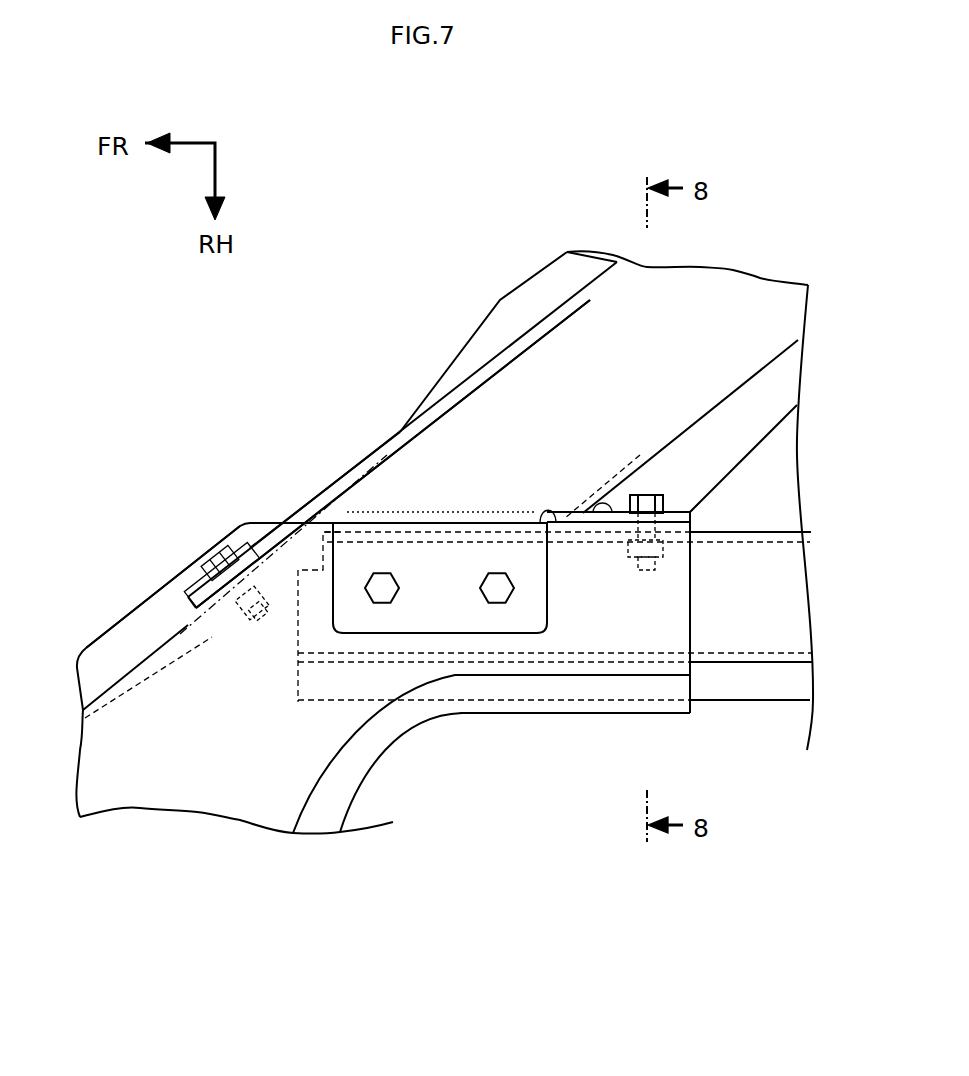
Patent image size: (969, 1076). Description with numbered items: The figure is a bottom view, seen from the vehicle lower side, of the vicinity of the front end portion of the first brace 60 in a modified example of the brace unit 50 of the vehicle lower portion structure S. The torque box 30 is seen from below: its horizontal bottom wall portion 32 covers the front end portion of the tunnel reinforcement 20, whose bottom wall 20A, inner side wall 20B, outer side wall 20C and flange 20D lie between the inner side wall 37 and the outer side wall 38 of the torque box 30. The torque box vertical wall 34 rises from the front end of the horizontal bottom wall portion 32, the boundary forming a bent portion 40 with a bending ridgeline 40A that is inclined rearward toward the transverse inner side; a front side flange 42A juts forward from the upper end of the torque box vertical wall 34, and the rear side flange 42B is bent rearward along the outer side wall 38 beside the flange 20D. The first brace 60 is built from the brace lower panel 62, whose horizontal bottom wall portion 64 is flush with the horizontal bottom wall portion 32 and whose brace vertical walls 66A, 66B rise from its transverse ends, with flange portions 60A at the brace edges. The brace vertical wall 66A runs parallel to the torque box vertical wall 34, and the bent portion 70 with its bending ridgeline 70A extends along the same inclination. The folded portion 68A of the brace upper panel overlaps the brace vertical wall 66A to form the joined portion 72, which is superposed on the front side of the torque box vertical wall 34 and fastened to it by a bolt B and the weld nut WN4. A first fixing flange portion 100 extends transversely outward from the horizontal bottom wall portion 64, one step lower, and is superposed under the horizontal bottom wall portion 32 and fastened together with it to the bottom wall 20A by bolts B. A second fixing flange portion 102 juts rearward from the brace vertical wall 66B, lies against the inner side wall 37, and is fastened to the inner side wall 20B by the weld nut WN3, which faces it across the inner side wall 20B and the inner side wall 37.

The tunnel reinforcement 20 is at (604, 663).
The bottom wall 20A is at (782, 610).
The inner side wall 20B is at (768, 530).
The outer side wall 20C is at (793, 667).
The flange 20D is at (782, 687).
The inner torque box 30 is at (76, 793).
The horizontal bottom wall portion 32 is at (205, 793).
The torque box vertical wall 34 is at (130, 670).
The inner side wall 37 is at (613, 514).
The outer side wall 38 is at (612, 677).
The bent portion 40 is at (186, 575).
The bending ridgeline 40A is at (73, 668).
The front side flange 42A is at (143, 617).
The rear side flange 42B is at (333, 797).
The brace unit 50 is at (400, 432).
The first brace 60 is at (402, 435).
The flange portion 60A is at (775, 390).
The brace lower panel 62 is at (330, 482).
The horizontal bottom wall portion 64 is at (730, 287).
The brace vertical wall 66A is at (300, 504).
The brace vertical wall 66B is at (772, 360).
The folded portion 68A is at (180, 632).
The bent portion 70 is at (508, 326).
The bending ridgeline 70A is at (533, 320).
The joined portion 72 is at (194, 592).
The first fixing flange portion 100 is at (498, 640).
The second fixing flange portion 102 is at (688, 506).
The bolt B is at (398, 580).
The weld nut WN3 is at (665, 553).
The weld nut WN4 is at (240, 617).
The vehicle lower portion structure S is at (337, 263).